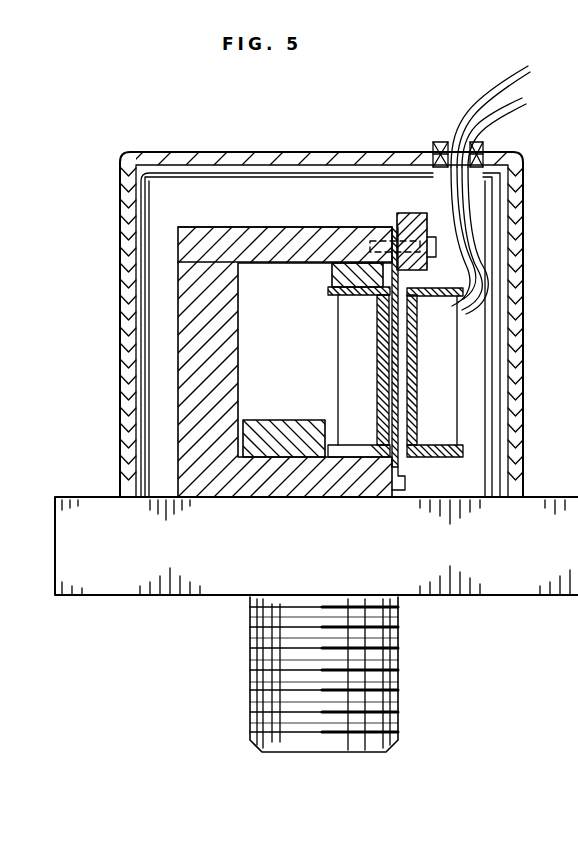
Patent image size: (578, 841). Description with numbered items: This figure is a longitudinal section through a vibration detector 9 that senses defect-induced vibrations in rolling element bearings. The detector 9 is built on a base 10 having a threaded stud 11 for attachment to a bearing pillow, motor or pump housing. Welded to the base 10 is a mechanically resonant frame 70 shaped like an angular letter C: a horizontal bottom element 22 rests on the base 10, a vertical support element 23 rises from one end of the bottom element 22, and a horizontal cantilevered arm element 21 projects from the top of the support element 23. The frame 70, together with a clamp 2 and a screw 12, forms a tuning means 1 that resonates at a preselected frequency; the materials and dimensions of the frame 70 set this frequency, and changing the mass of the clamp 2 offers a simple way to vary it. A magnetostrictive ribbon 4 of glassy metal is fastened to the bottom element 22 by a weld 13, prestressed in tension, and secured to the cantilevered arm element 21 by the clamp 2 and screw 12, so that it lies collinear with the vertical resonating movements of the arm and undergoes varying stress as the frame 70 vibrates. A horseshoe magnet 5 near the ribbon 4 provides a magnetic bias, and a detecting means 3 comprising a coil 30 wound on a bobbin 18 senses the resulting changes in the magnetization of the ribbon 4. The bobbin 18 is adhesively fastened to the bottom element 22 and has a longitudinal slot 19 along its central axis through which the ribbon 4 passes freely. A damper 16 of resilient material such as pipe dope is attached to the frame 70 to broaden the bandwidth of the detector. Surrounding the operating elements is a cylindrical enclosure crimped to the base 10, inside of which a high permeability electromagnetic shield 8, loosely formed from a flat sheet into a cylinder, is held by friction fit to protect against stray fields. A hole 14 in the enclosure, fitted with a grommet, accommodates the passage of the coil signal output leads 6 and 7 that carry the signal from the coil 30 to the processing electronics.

The tuning means 1 is at (322, 228).
The clamp 2 is at (408, 217).
The detecting means 3 is at (458, 394).
The magnetostrictive ribbon 4 is at (395, 358).
The magnet 5 is at (297, 420).
The coil signal output lead 6 is at (512, 110).
The coil signal output lead 7 is at (508, 88).
The electromagnetic shield 8 is at (138, 206).
The vibration detector 9 is at (140, 668).
The base 10 is at (135, 598).
The threaded stud 11 is at (374, 666).
The screw 12 is at (432, 250).
The weld 13 is at (406, 490).
The hole 14 is at (441, 142).
The damper 16 is at (332, 272).
The bobbin 18 is at (330, 291).
The longitudinal slot 19 is at (412, 345).
The cantilevered arm element 21 is at (308, 230).
The bottom element 22 is at (297, 497).
The vertical support element 23 is at (182, 321).
The coil 30 is at (358, 322).
The mechanically resonant frame 70 is at (213, 369).